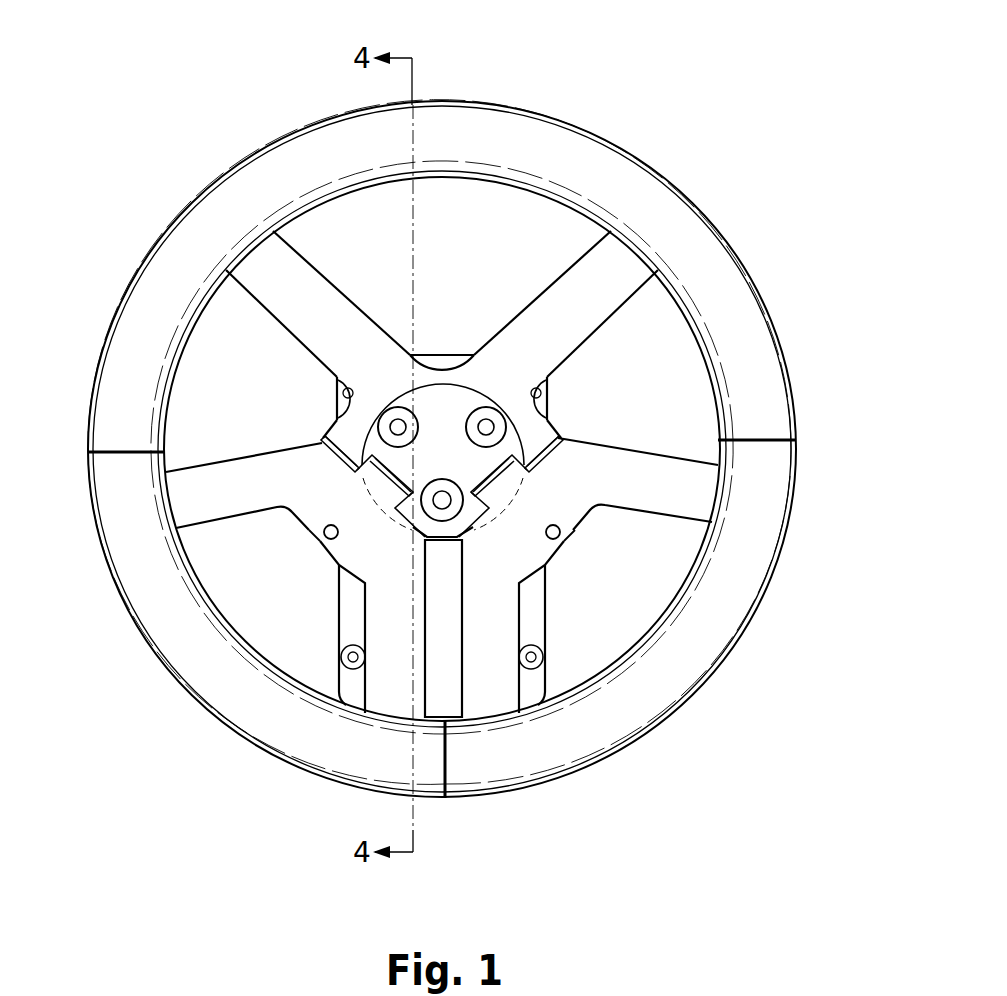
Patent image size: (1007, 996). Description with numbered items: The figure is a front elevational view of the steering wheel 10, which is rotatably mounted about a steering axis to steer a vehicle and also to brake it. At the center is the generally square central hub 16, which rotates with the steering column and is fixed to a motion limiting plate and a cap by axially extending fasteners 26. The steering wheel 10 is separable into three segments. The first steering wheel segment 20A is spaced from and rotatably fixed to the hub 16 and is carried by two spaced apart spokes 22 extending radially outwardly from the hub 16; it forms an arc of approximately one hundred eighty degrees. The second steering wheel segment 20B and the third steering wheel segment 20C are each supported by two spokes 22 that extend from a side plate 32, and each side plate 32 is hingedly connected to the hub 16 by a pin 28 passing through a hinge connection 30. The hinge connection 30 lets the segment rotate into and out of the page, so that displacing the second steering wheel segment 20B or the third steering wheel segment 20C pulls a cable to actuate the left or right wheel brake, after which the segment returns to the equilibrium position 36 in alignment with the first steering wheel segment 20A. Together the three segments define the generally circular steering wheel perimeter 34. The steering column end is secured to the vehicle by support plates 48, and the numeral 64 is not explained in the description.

The steering wheel 10 is at (485, 92).
The central hub 16 is at (423, 411).
The first steering wheel segment 20A is at (535, 135).
The second steering wheel segment 20B is at (272, 733).
The third steering wheel segment 20C is at (640, 712).
The spoke 22 is at (477, 486).
The axially extending fastener 26 is at (378, 427).
The pin 28 is at (382, 488).
The hinge connection 30 is at (336, 467).
The side plate 32 is at (361, 571).
The steering wheel perimeter 34 is at (743, 265).
The equilibrium position 36 is at (207, 685).
The support plate 48 is at (537, 618).
The hook 64 is at (322, 530).